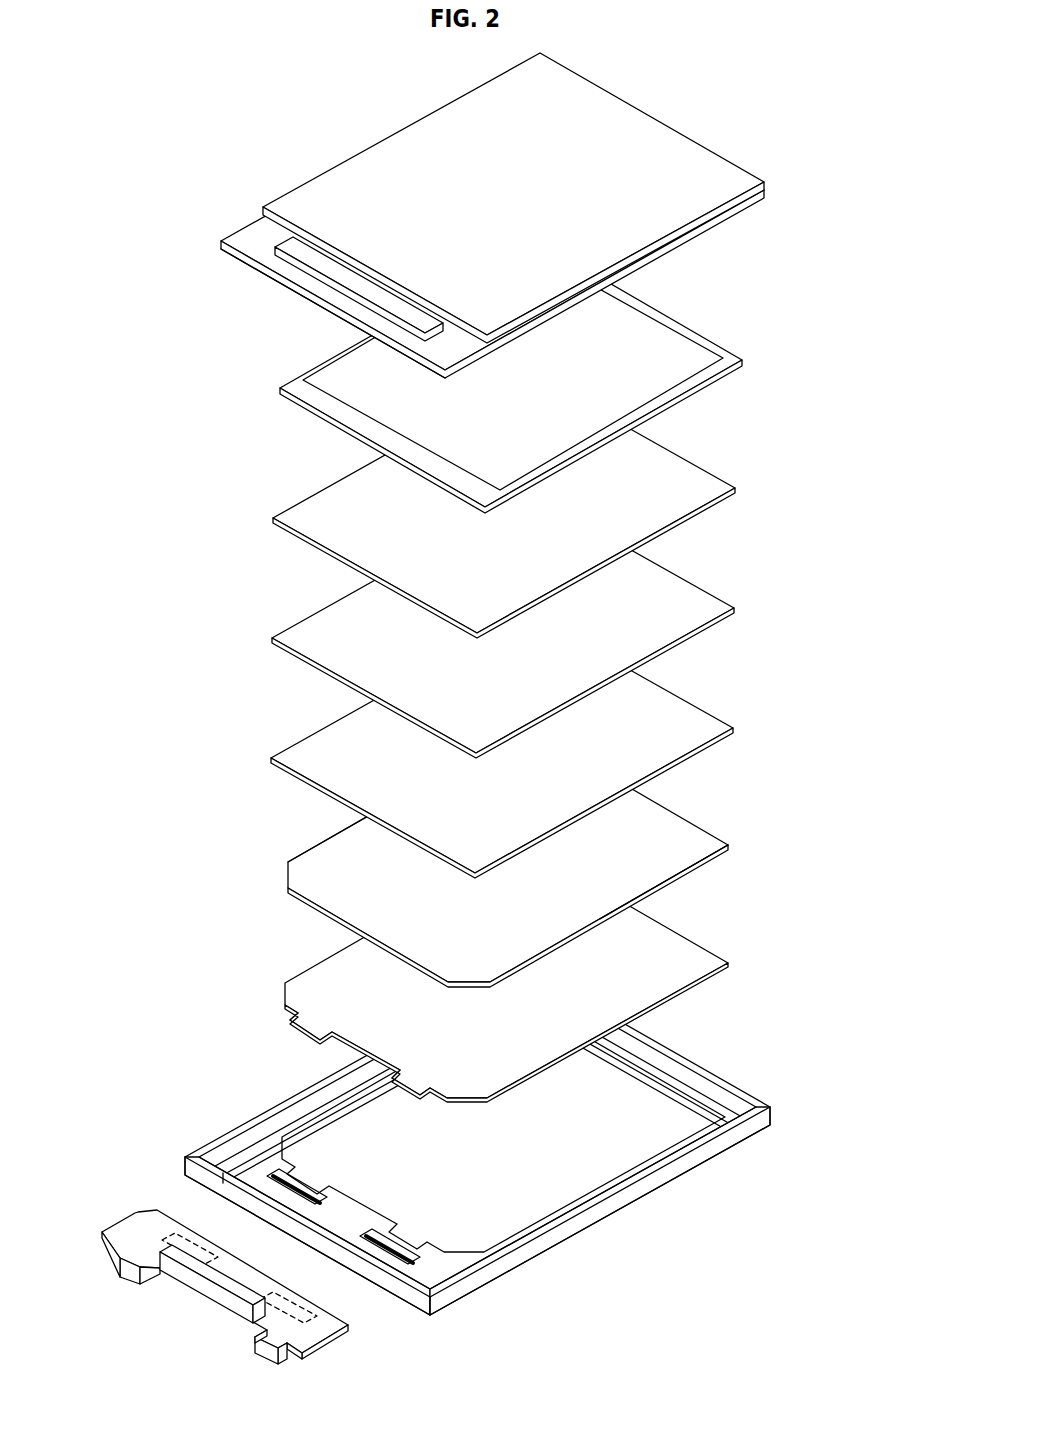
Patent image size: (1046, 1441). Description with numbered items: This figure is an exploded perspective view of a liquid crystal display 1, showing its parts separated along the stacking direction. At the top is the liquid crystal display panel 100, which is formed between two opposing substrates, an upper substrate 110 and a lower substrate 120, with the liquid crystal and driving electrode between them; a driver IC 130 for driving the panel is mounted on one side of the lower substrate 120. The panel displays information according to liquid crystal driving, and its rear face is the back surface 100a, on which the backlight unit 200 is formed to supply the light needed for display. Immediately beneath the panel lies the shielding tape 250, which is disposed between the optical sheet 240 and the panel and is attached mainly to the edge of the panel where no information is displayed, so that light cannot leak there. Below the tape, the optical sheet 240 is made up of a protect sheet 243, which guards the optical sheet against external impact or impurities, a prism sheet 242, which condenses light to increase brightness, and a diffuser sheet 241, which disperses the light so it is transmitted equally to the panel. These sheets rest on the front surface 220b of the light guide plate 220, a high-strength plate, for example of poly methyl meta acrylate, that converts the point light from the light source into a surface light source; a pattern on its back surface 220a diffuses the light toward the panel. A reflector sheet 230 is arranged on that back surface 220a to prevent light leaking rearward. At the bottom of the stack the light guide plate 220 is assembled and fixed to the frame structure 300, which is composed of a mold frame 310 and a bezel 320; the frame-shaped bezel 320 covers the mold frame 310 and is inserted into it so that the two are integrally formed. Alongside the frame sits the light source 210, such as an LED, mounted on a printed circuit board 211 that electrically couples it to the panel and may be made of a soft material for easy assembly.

The liquid crystal display 1 is at (845, 124).
The liquid crystal display panel 100 is at (462, 215).
The back surface of liquid crystal display panel 100a is at (265, 248).
The upper substrate 110 is at (392, 153).
The lower substrate 120 is at (462, 219).
The driver IC 130 is at (337, 273).
The backlight unit 200 is at (130, 384).
The light source 210 is at (193, 1273).
The printed circuit board 211 is at (130, 1242).
The light guide plate 220 is at (507, 856).
The back surface of light guide plate 220a is at (712, 860).
The front surface of light guide plate 220b is at (325, 892).
The reflector sheet 230 is at (305, 993).
The optical sheet 240 is at (576, 625).
The diffuser sheet 241 is at (705, 717).
The prism sheet 242 is at (713, 603).
The protect sheet 243 is at (548, 505).
The shielding tape 250 is at (698, 335).
The frame structure 300 is at (496, 1141).
The mold frame 310 is at (683, 1155).
The bezel 320 is at (733, 1123).